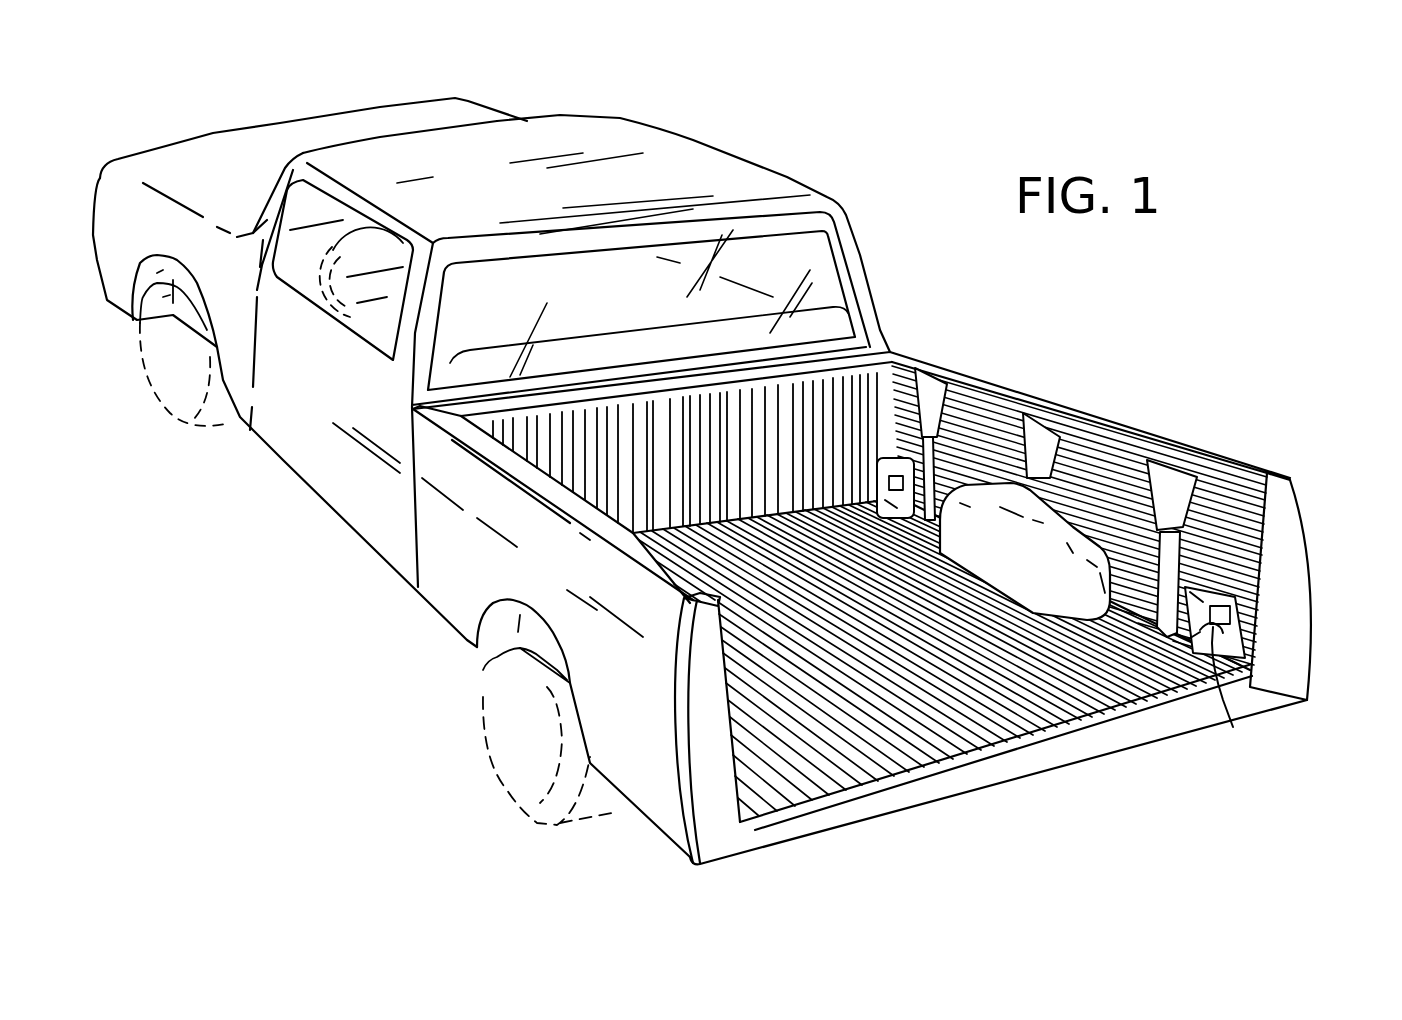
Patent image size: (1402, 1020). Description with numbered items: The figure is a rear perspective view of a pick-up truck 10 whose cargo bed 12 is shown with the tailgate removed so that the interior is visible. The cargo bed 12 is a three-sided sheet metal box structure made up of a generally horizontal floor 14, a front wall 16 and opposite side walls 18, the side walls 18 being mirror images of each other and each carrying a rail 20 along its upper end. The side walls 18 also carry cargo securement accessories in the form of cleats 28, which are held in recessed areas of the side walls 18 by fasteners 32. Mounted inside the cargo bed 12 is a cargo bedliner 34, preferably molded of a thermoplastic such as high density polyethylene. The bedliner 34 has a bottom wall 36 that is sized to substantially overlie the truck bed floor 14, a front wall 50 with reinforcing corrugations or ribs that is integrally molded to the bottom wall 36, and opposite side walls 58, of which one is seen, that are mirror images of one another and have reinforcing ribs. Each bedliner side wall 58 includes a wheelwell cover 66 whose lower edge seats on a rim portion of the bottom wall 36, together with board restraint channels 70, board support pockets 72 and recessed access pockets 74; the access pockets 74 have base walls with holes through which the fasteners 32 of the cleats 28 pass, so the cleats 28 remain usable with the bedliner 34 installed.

The pick-up truck 10 is at (893, 143).
The cargo bed 12 is at (1300, 497).
The floor 14 is at (1093, 750).
The front wall 16 is at (863, 335).
The side walls 18 is at (1097, 413).
The rail 20 is at (1002, 390).
The cleats 28 is at (903, 457).
The fasteners 32 is at (1234, 688).
The cargo bedliner 34 is at (900, 792).
The bottom wall 36 is at (980, 745).
The front wall 50 is at (652, 413).
The side walls 58 is at (1227, 493).
The wheelwell cover 66 is at (1040, 570).
The board restraint channels 70 is at (940, 547).
The board support pockets 72 is at (935, 385).
The recessed access pockets 74 is at (877, 477).